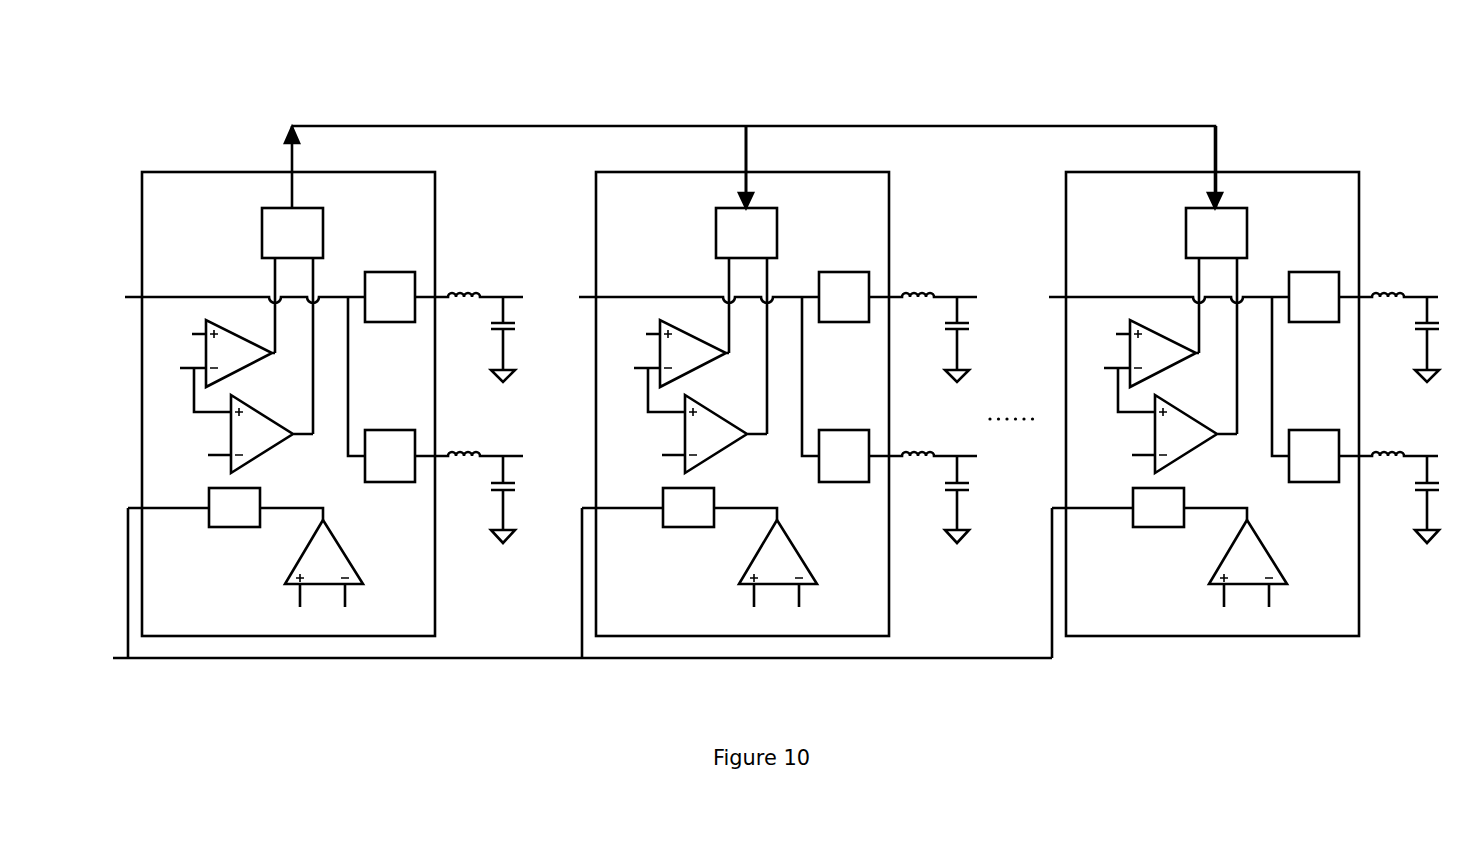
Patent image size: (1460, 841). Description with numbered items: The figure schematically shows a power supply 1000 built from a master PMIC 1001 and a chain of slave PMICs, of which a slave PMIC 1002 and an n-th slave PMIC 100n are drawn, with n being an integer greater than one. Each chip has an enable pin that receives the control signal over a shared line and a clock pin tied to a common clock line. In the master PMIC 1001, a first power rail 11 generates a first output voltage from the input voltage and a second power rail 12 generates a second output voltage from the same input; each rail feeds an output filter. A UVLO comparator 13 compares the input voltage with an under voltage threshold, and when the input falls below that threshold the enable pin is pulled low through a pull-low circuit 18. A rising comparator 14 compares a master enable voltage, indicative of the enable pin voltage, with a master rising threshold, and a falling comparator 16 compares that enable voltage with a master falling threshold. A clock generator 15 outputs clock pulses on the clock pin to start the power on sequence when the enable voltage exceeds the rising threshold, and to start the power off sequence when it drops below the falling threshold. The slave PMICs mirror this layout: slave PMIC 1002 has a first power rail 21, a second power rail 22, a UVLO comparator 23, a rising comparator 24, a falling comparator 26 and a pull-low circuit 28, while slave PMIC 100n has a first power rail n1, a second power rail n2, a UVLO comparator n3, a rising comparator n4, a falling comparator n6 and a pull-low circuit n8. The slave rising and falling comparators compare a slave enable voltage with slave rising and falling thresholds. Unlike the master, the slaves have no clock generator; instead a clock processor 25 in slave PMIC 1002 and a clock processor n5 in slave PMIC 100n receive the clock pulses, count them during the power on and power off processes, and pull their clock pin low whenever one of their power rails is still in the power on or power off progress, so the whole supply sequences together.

The power supply 1000 is at (167, 99).
The master PMIC 1001 is at (288, 404).
The slave PMIC 1002 is at (742, 404).
The slave PMIC 100n is at (1212, 404).
The first power rail 11 is at (390, 297).
The second power rail 12 is at (390, 456).
The UVLO comparator 13 is at (324, 563).
The rising comparator 14 is at (260, 434).
The clock generator 15 is at (292, 233).
The falling comparator 16 is at (227, 353).
The pull-low circuit 18 is at (234, 507).
The first power rail 21 is at (844, 297).
The second power rail 22 is at (844, 456).
The UVLO comparator 23 is at (778, 563).
The rising comparator 24 is at (714, 434).
The clock processor 25 is at (746, 233).
The falling comparator 26 is at (681, 353).
The pull-low circuit 28 is at (688, 507).
The first power rail n1 is at (1314, 297).
The second power rail n2 is at (1314, 456).
The UVLO comparator n3 is at (1248, 563).
The rising comparator n4 is at (1184, 434).
The clock processor n5 is at (1216, 233).
The falling comparator n6 is at (1151, 353).
The pull-low circuit n8 is at (1158, 507).